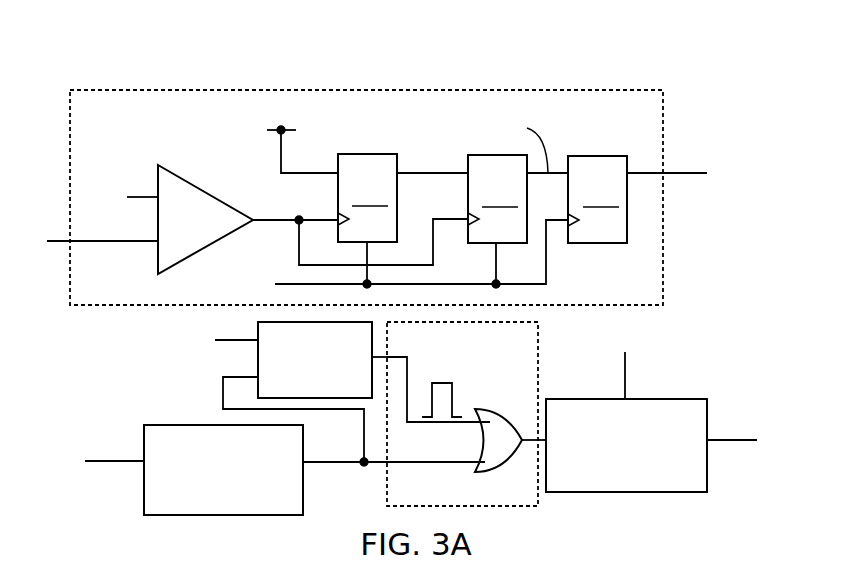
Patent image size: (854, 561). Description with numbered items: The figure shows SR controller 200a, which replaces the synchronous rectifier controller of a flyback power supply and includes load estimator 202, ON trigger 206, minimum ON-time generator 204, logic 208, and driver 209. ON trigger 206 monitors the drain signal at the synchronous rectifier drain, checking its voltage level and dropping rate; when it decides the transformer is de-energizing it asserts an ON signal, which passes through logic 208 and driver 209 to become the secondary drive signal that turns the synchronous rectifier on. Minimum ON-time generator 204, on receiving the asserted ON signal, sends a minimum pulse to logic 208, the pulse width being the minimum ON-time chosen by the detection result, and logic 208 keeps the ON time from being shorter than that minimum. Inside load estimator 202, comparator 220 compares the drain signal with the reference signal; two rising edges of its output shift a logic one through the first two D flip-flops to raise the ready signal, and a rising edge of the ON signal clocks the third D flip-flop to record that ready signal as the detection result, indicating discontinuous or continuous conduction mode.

The SR controller 200a is at (143, 72).
The load estimator 202 is at (554, 90).
The comparator 220 is at (181, 178).
The minimum ON-time generator 204 is at (330, 391).
The ON trigger 206 is at (245, 505).
The logic 208 is at (538, 378).
The driver 209 is at (646, 480).